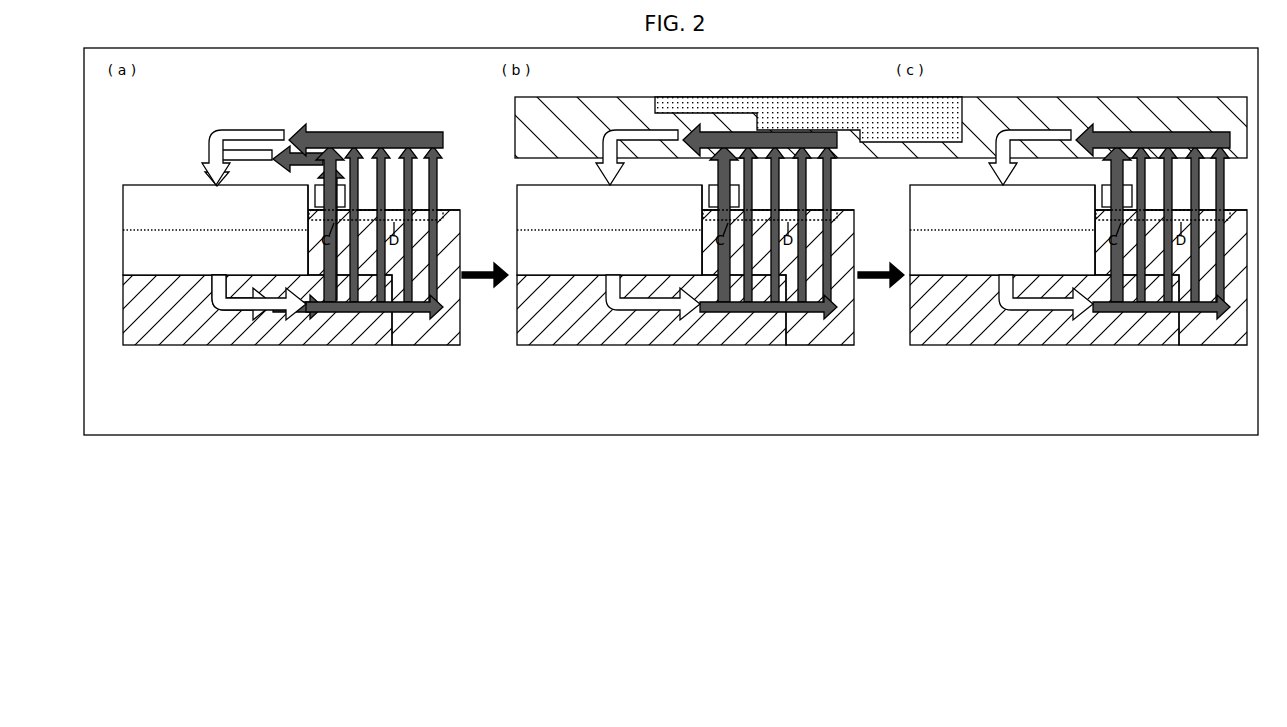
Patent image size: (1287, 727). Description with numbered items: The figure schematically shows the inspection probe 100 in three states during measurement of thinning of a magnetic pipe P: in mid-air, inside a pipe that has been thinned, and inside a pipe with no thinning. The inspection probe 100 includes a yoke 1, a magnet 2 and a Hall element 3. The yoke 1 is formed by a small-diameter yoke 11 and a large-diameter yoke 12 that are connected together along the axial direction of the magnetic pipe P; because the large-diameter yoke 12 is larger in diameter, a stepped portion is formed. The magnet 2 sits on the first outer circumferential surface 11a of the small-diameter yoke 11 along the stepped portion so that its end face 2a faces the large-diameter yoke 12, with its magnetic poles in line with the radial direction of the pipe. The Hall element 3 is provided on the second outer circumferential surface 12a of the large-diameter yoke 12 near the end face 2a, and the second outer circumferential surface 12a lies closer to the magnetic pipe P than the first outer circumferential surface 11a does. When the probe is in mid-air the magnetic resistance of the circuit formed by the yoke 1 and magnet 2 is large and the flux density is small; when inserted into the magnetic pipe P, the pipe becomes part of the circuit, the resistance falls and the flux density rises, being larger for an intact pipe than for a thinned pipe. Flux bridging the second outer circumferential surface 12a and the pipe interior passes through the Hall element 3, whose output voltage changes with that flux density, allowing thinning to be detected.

The inspection probe 100 is at (146, 173).
The yoke 1 is at (689, 300).
The small-diameter yoke 11 is at (356, 338).
The first outer circumferential surface 11a is at (141, 276).
The large-diameter yoke 12 is at (418, 338).
The second outer circumferential surface 12a is at (445, 210).
The magnet 2 is at (123, 232).
The end face 2a is at (311, 186).
The Hall element 3 is at (347, 197).
The magnetic pipe P is at (525, 129).